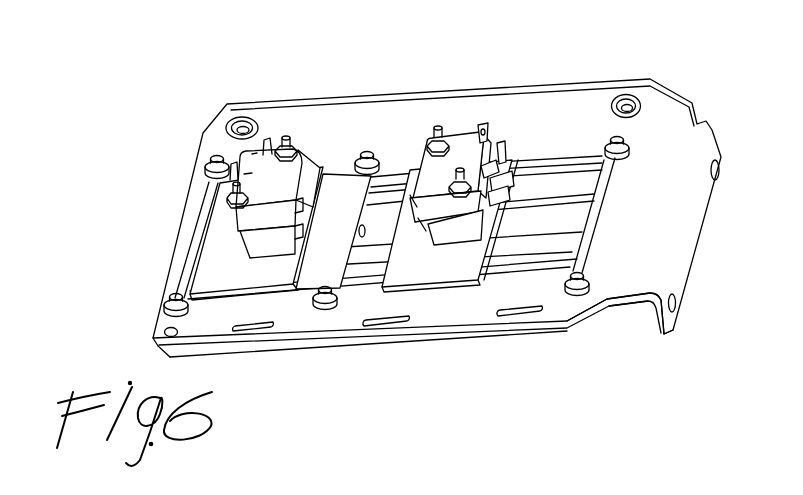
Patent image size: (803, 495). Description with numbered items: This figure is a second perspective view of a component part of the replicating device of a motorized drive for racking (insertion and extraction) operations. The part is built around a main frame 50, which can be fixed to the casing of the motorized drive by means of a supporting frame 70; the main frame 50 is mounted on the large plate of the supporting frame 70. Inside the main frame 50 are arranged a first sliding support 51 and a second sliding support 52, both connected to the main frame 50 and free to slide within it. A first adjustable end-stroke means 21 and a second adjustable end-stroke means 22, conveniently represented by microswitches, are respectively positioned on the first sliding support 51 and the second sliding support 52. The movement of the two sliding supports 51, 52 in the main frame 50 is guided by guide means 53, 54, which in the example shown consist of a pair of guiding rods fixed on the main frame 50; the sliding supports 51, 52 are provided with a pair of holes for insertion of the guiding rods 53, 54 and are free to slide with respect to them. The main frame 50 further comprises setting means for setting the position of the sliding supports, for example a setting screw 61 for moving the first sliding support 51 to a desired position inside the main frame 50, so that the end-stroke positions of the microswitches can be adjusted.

The supporting frame 70 is at (209, 125).
The main frame 50 is at (600, 318).
The second adjustable end-stroke means 22 is at (270, 152).
The first adjustable end-stroke means 21 is at (461, 140).
The guide means 54 is at (552, 183).
The second sliding support 52 is at (217, 247).
The guide means 53 is at (362, 285).
The first sliding support 51 is at (413, 263).
The setting screw 61 is at (533, 243).